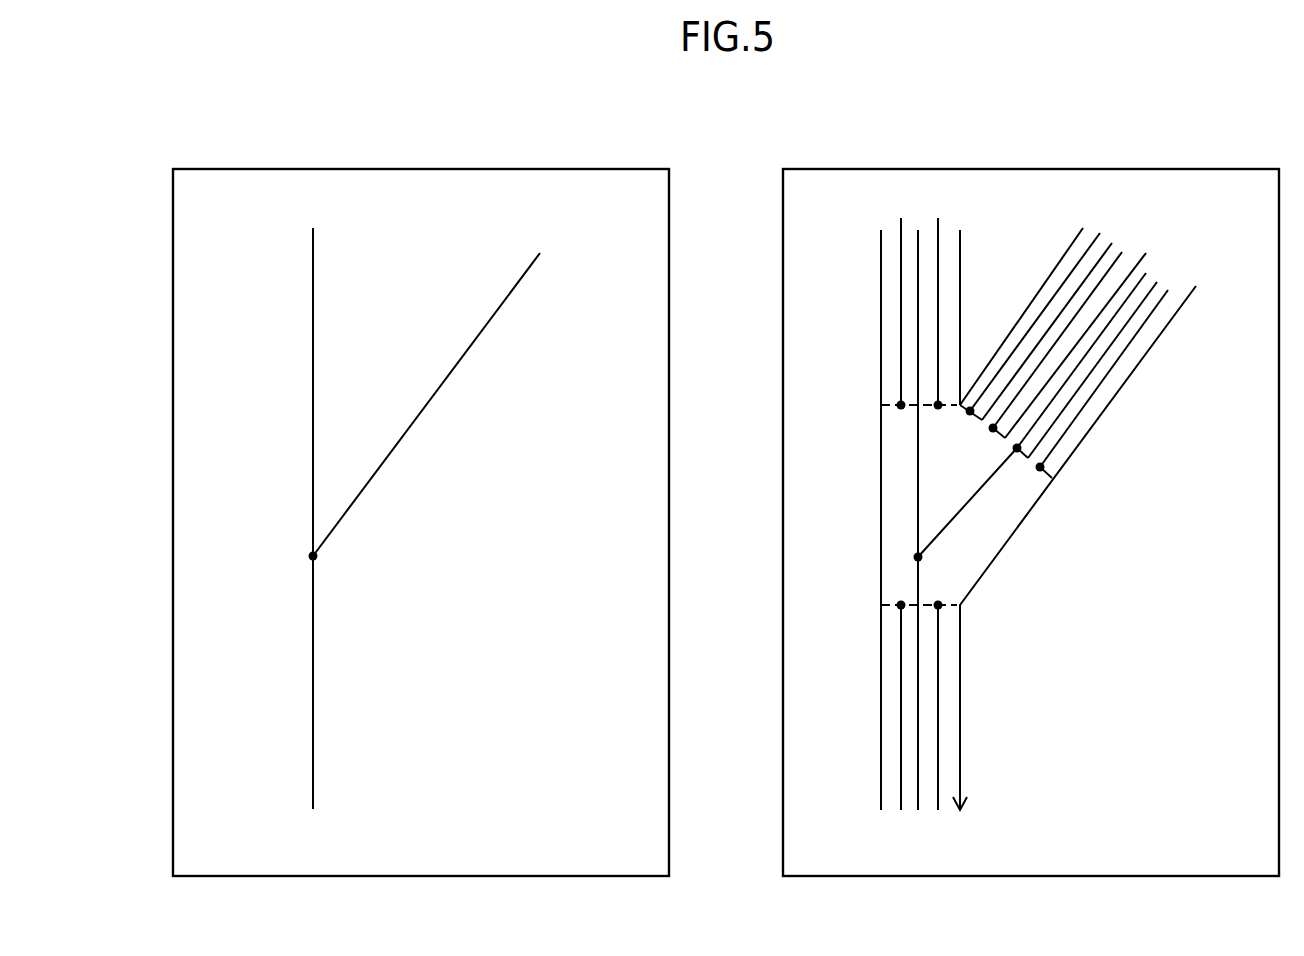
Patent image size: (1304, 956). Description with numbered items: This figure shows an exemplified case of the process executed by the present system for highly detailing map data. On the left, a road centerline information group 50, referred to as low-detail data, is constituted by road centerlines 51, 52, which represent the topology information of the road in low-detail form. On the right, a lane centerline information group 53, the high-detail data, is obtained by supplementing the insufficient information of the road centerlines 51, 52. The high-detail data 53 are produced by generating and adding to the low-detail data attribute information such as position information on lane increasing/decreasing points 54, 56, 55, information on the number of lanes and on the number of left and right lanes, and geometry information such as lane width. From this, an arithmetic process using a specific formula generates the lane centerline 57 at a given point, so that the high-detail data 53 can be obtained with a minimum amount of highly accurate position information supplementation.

The road centerline information group 50 is at (200, 169).
The road centerline 51 is at (313, 262).
The road centerline 52 is at (422, 418).
The lane centerline information group 53 is at (813, 169).
The lane increasing/decreasing point 54 is at (881, 405).
The lane increasing/decreasing point 55 is at (880, 608).
The lane increasing/decreasing point 56 is at (1050, 480).
The lane centerline 57 is at (901, 223).